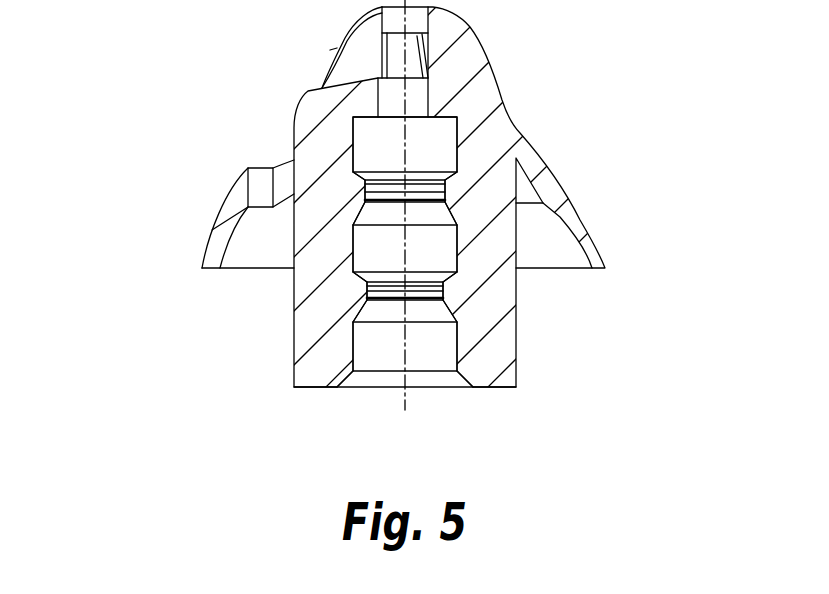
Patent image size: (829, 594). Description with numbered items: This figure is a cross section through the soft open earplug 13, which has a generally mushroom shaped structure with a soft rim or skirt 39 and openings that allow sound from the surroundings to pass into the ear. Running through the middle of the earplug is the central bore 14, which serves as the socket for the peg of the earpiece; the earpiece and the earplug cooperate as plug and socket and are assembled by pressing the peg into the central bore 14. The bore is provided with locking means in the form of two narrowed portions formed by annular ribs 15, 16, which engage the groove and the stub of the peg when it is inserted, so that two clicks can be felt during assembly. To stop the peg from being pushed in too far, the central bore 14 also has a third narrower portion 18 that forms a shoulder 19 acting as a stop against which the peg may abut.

The soft open earplug 13 is at (183, 132).
The central bore 14 is at (362, 386).
The annular rib 15 is at (437, 290).
The annular rib 16 is at (433, 189).
The third narrower portion 18 is at (418, 92).
The shoulder 19 is at (447, 130).
The soft rim or skirt 39 is at (596, 237).